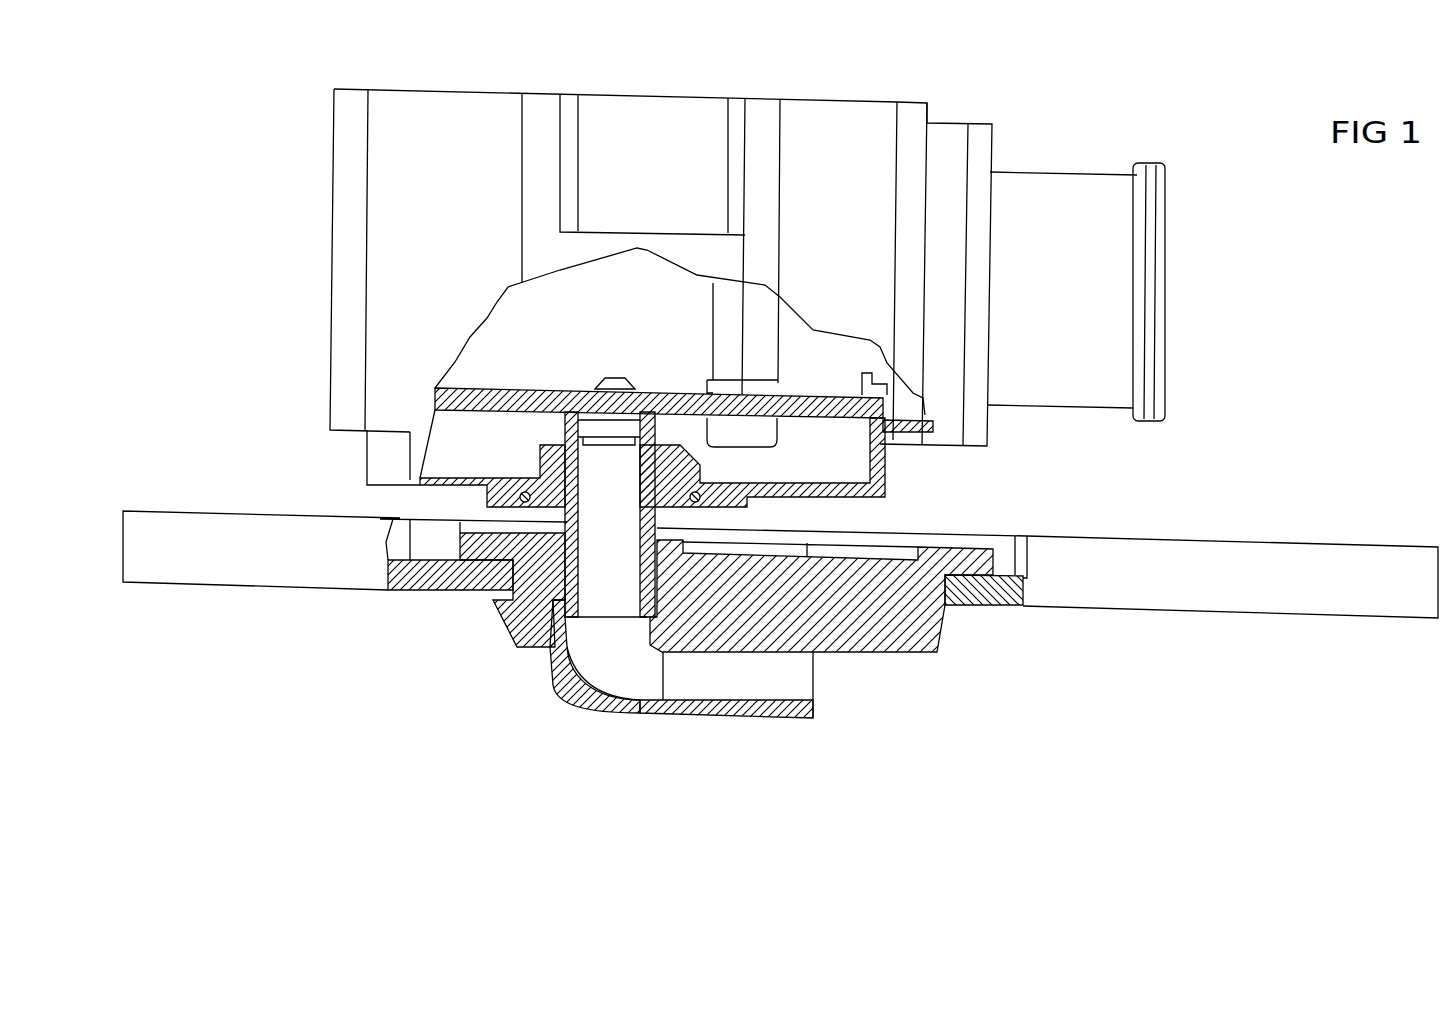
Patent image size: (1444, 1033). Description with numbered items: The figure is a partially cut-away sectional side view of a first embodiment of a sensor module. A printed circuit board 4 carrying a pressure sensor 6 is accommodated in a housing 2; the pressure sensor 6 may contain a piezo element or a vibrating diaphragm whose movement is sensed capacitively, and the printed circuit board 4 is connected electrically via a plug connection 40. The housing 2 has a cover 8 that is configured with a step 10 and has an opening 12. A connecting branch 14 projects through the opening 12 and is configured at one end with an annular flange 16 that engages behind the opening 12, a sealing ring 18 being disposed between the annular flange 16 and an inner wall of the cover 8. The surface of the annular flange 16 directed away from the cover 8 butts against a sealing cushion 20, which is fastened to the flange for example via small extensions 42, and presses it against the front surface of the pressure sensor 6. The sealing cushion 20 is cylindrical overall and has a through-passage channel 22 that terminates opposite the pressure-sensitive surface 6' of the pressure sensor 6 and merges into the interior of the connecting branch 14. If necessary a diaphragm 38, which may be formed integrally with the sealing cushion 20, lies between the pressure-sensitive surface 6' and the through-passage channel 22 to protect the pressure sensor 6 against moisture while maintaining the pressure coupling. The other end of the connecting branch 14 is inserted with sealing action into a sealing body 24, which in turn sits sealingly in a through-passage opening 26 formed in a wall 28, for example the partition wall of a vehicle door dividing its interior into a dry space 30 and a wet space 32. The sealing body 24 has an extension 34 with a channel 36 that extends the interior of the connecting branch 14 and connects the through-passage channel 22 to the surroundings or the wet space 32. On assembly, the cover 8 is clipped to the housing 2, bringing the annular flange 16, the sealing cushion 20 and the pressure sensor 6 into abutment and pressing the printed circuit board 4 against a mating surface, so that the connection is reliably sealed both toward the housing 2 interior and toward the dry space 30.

The housing 2 is at (413, 90).
The printed circuit board 4 is at (475, 388).
The pressure sensor 6 is at (596, 390).
The pressure-sensitive surface 6' is at (680, 432).
The cover 8 is at (885, 480).
The step 10 is at (475, 503).
The opening 12 is at (497, 600).
The connecting branch 14 is at (545, 650).
The annular flange 16 is at (655, 412).
The sealing ring 18 is at (443, 590).
The sealing cushion 20 is at (528, 392).
The through-passage channel 22 is at (612, 470).
The sealing body 24 is at (945, 640).
The through-passage opening 26 is at (1003, 535).
The wall 28 is at (1280, 548).
The dry space 30 is at (1250, 420).
The wet space 32 is at (1250, 678).
The extension 34 is at (733, 720).
The channel 36 is at (813, 690).
The diaphragm 38 is at (655, 395).
The plug connection 40 is at (1050, 186).
The small extensions 42 is at (527, 458).